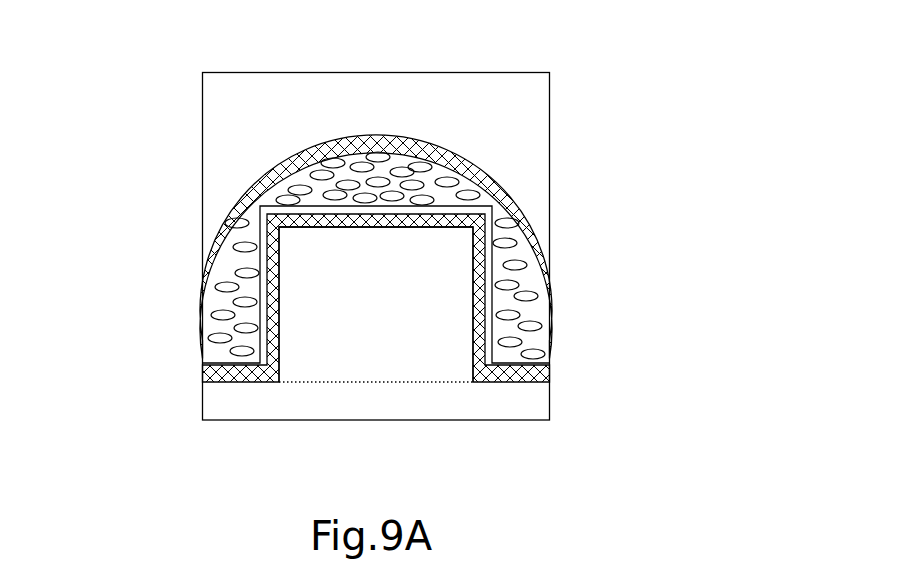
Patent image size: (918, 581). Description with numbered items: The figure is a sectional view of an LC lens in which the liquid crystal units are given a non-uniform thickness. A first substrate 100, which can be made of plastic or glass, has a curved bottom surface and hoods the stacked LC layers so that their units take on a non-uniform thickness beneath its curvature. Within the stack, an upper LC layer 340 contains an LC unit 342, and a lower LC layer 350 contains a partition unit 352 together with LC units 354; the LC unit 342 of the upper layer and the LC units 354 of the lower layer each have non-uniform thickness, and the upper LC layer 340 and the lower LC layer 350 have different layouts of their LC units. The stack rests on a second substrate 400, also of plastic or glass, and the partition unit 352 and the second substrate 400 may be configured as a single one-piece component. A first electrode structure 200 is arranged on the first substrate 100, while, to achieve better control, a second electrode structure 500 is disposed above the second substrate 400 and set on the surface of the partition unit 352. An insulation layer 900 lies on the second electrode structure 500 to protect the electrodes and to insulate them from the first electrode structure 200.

The first substrate 100 is at (493, 98).
The first electrode structure 200 is at (268, 180).
The upper LC layer 340 is at (442, 197).
The LC unit 342 is at (378, 178).
The lower LC layer 350 is at (655, 213).
The partition unit 352 is at (457, 280).
The LC units 354 is at (217, 327).
The second substrate 400 is at (468, 408).
The second electrode structure 500 is at (203, 382).
The insulation layer 900 is at (207, 363).